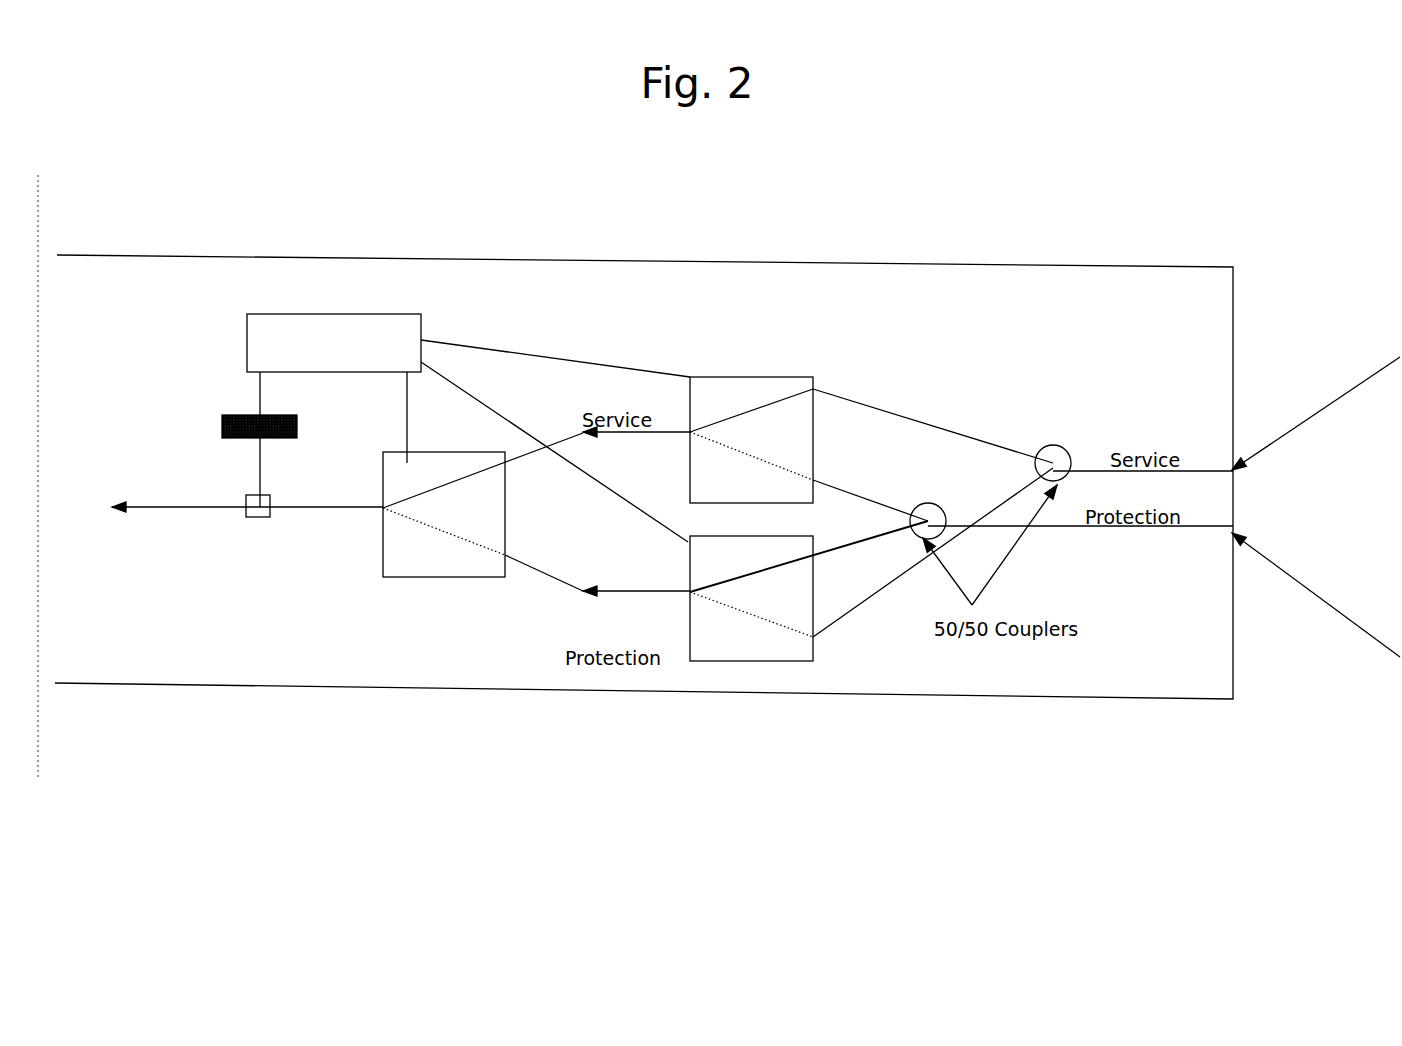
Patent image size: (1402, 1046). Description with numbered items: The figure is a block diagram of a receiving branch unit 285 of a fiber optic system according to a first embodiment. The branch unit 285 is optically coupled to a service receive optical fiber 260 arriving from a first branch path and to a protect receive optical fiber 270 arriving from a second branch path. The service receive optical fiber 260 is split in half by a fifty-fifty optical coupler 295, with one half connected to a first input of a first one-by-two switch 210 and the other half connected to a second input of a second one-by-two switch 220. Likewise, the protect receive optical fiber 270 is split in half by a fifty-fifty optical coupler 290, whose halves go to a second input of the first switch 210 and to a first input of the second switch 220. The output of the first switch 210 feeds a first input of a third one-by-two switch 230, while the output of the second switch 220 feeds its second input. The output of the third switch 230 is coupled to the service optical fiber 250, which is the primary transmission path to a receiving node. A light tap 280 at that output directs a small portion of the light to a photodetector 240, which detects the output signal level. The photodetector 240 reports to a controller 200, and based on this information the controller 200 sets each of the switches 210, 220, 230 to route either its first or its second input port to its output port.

The controller 200 is at (345, 313).
The first 1×2 switch 210 is at (789, 374).
The second 1×2 switch 220 is at (789, 534).
The third 1×2 switch 230 is at (481, 450).
The photodetector 240 is at (217, 432).
The service optical fiber 250 is at (210, 508).
The service receive optical fiber 260 is at (1366, 380).
The protect receive optical fiber 270 is at (1373, 644).
The light tap 280 is at (243, 520).
The branch unit 285 is at (373, 255).
The 50/50 optical coupler 290 is at (948, 516).
The 50/50 optical coupler 295 is at (1078, 456).